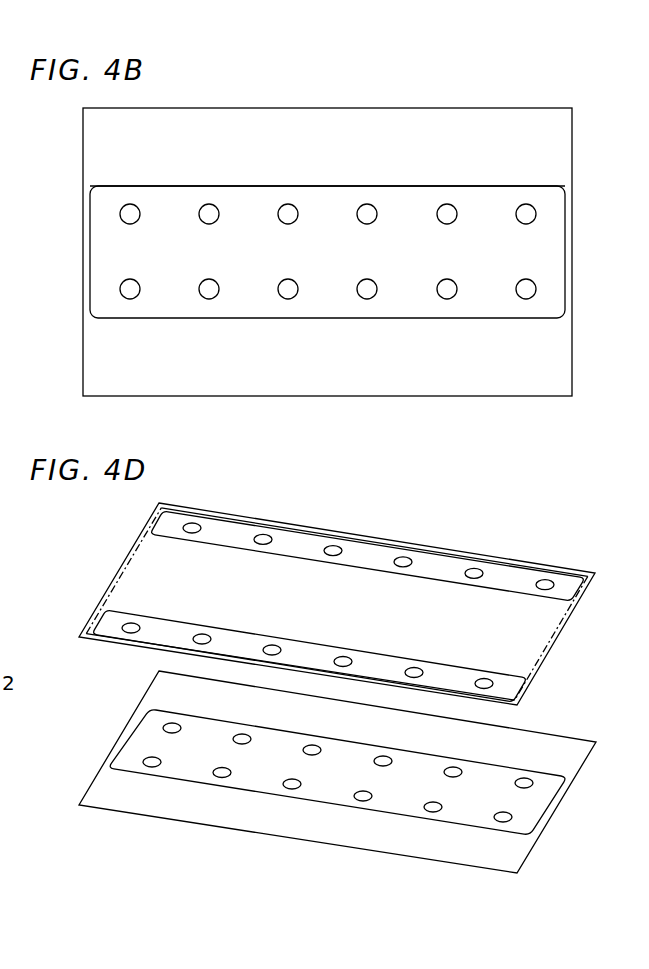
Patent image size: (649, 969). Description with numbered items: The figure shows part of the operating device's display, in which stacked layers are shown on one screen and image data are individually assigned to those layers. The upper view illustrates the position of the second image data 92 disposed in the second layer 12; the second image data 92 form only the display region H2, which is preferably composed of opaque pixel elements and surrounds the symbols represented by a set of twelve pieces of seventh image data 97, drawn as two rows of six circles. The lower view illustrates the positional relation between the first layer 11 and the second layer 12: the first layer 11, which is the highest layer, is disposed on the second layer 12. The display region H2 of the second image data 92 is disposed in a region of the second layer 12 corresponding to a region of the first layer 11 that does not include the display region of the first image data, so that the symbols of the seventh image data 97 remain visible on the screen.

In FIG. 4B, the second layer 12 is at (535, 118).
In FIG. 4D, the second layer 12 is at (517, 852).
In FIG. 4D, the first layer 11 is at (531, 682).
In FIG. 4B, the second image data 92 is at (554, 255).
In FIG. 4D, the second image data 92 is at (282, 713).
In FIG. 4B, the seventh image data 97 is at (287, 207).
In FIG. 4B, the display region H2 is at (417, 186).